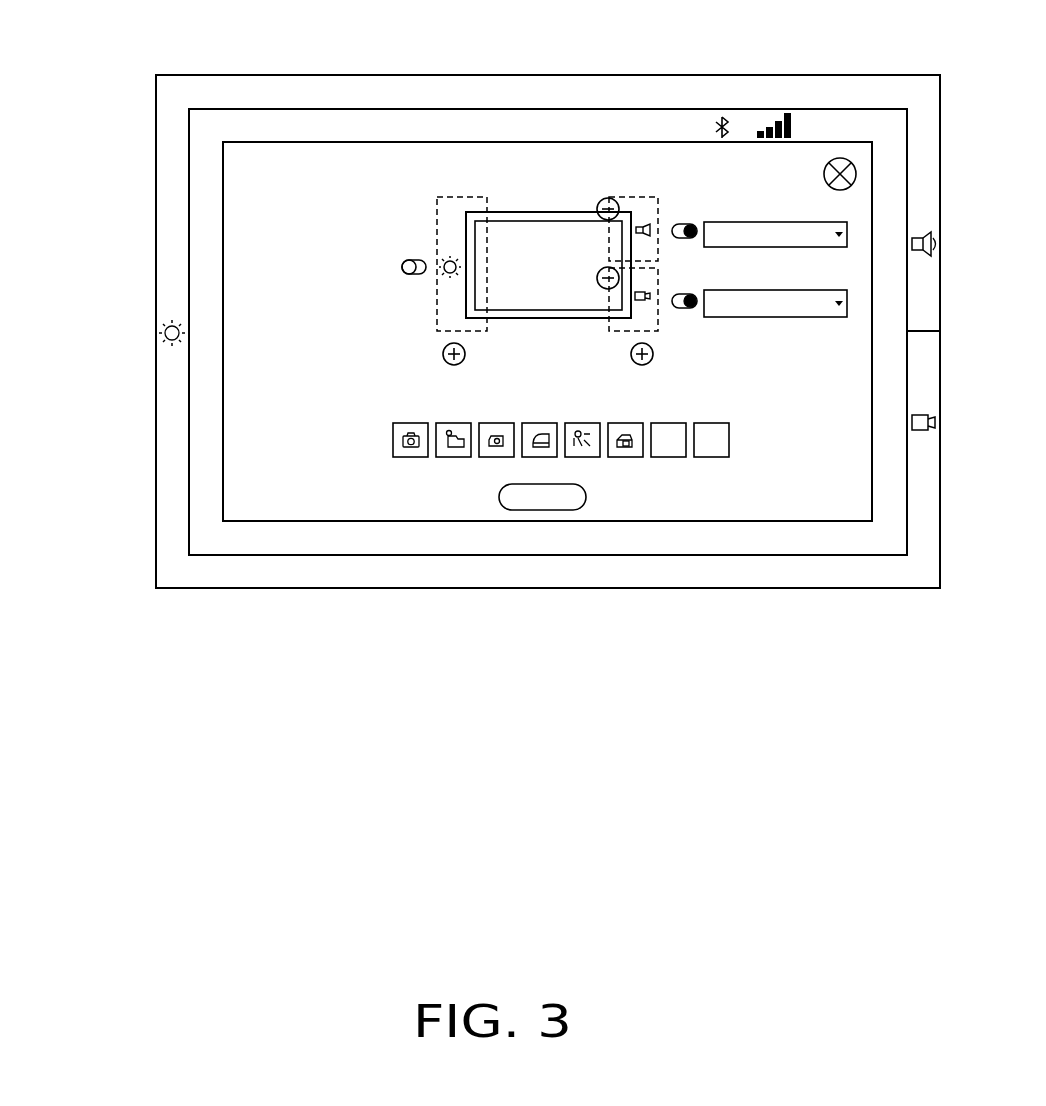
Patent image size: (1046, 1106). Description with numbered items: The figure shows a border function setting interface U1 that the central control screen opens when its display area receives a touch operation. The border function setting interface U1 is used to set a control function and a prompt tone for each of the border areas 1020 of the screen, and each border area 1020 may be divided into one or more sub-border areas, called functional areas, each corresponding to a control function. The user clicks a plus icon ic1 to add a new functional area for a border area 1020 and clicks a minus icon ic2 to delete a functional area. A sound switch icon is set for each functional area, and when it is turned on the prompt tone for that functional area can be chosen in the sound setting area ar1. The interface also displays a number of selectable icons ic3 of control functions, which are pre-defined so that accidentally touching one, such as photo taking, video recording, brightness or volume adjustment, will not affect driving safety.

The border area 1020 is at (172, 400).
The border function setting interface U1 is at (471, 141).
The minus icon ic2 is at (601, 198).
The sound setting area ar1 is at (752, 222).
The selectable icons of control functions ic3 is at (410, 457).
The plus icon ic1 is at (649, 363).